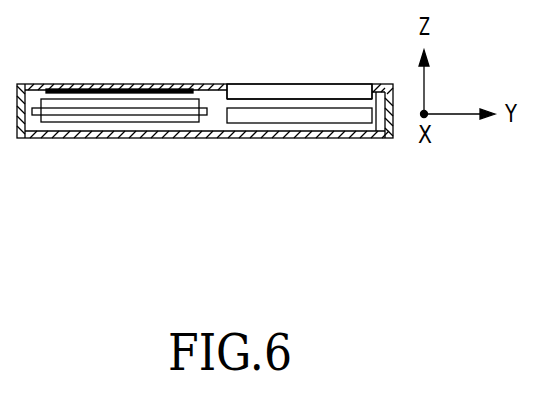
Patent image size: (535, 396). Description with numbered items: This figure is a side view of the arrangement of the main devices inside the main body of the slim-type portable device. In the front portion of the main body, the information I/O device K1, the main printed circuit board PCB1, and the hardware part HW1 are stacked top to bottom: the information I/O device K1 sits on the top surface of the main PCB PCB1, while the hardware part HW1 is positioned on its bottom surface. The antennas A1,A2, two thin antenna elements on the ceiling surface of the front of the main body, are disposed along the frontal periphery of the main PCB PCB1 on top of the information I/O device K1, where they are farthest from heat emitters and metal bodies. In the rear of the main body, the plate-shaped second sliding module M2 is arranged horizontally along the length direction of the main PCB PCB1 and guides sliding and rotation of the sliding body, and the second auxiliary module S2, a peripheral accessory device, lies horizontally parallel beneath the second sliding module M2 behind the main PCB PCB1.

The antennas A1,A2 is at (67, 87).
The main printed circuit board PCB1 is at (130, 110).
The information I/O device K1 is at (174, 103).
The hardware part HW1 is at (147, 118).
The second sliding module M2 is at (304, 95).
The second auxiliary module S2 is at (313, 115).